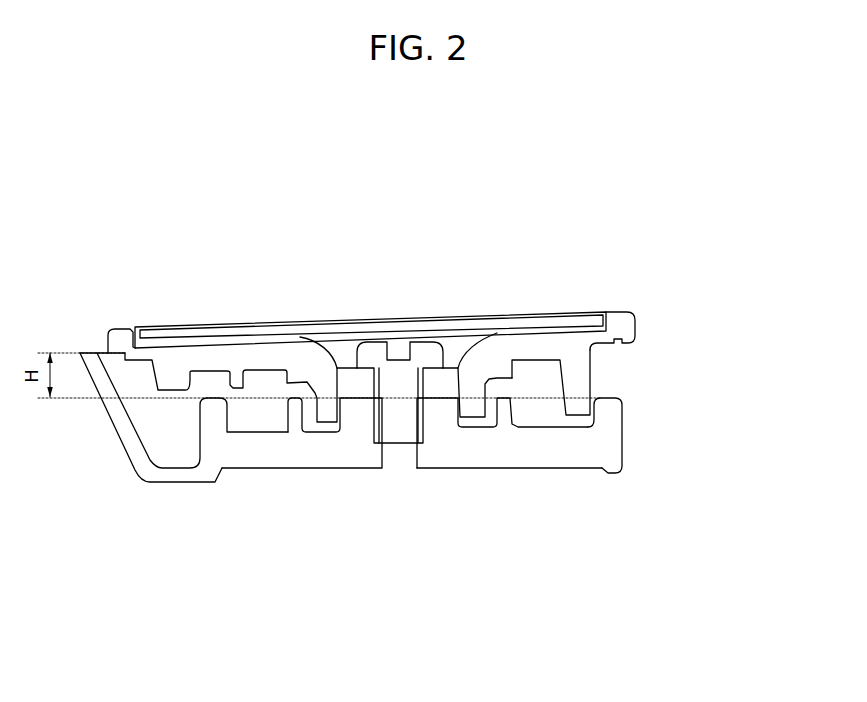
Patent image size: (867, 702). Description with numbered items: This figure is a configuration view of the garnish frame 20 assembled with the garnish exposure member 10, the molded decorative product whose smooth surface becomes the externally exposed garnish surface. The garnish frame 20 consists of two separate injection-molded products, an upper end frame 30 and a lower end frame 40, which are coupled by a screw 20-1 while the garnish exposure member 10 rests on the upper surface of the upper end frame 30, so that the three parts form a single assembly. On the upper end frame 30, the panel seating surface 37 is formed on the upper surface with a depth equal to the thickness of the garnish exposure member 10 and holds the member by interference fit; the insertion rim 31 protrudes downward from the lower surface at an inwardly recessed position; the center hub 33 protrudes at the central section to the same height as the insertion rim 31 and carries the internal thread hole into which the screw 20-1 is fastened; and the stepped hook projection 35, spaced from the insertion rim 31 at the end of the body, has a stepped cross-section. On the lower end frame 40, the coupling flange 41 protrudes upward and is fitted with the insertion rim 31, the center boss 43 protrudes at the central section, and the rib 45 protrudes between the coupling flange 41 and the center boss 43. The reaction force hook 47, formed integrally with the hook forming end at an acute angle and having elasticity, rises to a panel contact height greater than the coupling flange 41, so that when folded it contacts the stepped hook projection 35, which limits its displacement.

The garnish exposure member 10 is at (222, 318).
The garnish frame 20 is at (125, 214).
The screw 20-1 is at (400, 365).
The upper end frame 30 is at (748, 266).
The insertion rim 31 is at (628, 402).
The center hub 33 is at (594, 382).
The stepped hook projection 35 is at (667, 331).
The panel seating surface 37 is at (522, 311).
The lower end frame 40 is at (268, 593).
The coupling flange 41 is at (557, 495).
The center boss 43 is at (509, 495).
The rib 45 is at (302, 495).
The reaction force hook 47 is at (184, 472).